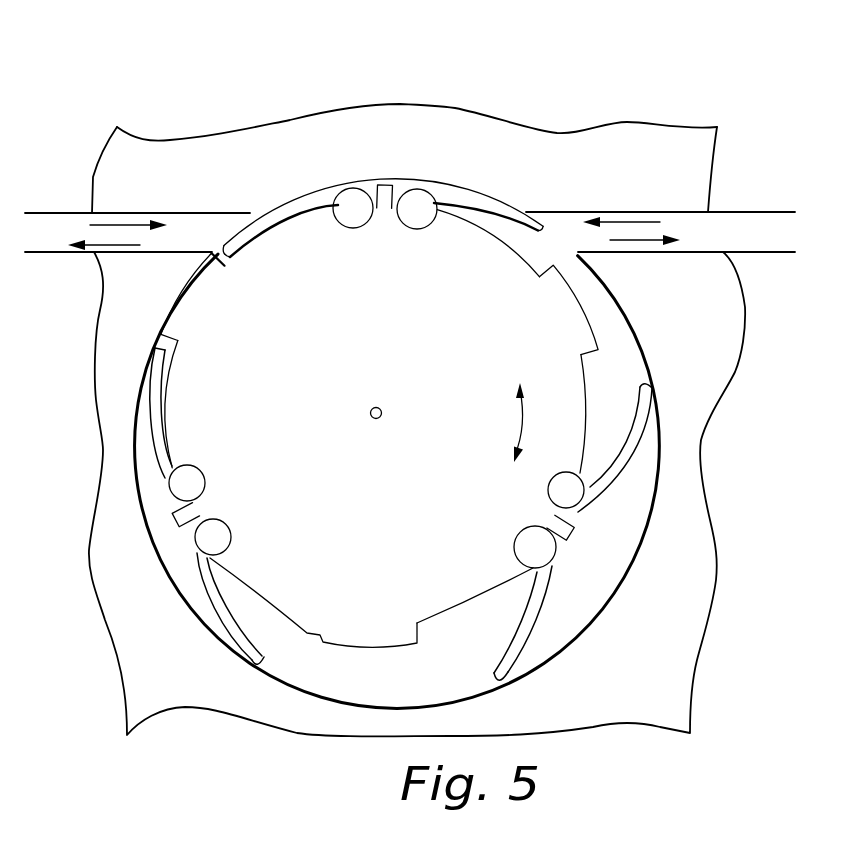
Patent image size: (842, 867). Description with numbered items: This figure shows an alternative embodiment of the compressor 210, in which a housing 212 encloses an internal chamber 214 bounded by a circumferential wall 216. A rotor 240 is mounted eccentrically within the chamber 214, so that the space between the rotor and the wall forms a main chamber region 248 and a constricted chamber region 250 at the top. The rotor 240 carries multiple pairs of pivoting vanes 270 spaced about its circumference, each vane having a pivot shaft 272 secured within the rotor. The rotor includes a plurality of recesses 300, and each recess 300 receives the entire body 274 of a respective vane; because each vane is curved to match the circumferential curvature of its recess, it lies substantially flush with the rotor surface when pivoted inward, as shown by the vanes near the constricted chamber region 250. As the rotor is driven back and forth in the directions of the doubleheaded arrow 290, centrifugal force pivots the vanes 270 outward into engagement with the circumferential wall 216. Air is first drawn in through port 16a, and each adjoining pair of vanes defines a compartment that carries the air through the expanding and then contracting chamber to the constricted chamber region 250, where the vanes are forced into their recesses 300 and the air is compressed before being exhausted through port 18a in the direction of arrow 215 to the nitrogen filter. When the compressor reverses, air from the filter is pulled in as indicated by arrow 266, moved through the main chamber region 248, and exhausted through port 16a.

The compressor 210 is at (193, 76).
The housing 212 is at (457, 110).
The internal chamber 214 is at (450, 682).
The arrow 215 is at (640, 240).
The circumferential wall 216 is at (616, 573).
The port 16a is at (143, 256).
The port 18a is at (642, 212).
The rotor 240 is at (553, 337).
The main chamber region 248 is at (337, 680).
The constricted chamber region 250 is at (453, 185).
The arrow 266 is at (622, 212).
The pivoting vane 270 is at (299, 200).
The pivot shaft 272 is at (410, 215).
The vane body 274 is at (260, 226).
The doubleheaded arrow 290 is at (520, 418).
The recess 300 is at (256, 241).